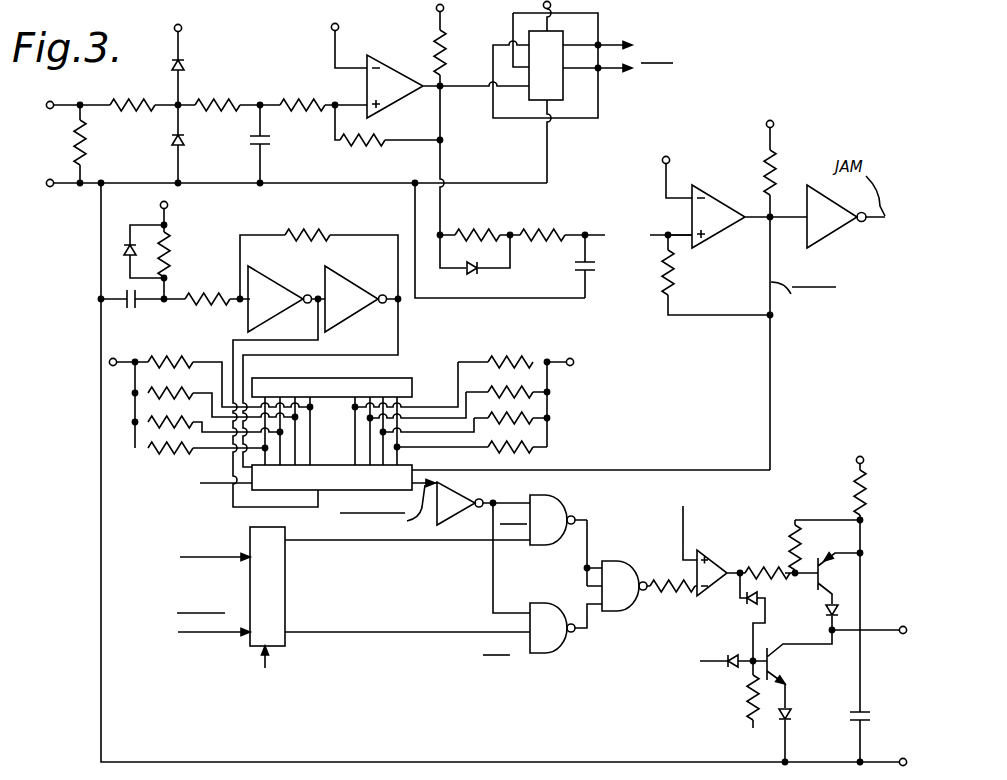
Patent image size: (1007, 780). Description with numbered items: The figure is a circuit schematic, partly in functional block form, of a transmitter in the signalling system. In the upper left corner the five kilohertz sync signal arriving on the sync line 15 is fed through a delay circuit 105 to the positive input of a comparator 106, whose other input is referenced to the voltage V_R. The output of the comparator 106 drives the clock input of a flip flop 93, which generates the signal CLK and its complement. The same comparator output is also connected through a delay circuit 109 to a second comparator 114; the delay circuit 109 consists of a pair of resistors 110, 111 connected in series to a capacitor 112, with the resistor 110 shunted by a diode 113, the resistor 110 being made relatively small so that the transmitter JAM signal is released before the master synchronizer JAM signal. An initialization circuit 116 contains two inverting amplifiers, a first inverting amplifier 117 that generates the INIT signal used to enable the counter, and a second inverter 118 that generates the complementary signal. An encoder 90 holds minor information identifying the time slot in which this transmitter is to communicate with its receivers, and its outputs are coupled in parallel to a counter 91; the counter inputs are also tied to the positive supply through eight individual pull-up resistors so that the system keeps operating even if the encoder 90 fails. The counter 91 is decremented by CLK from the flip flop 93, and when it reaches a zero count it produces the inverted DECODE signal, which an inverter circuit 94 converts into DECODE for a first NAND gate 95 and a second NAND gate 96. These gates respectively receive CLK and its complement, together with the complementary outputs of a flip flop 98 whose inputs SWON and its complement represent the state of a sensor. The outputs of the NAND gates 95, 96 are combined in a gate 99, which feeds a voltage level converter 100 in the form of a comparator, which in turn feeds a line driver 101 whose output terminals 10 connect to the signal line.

The sync line 15 is at (50, 112).
The delay circuit 105 is at (236, 158).
The comparator 106 is at (392, 74).
The flip flop 93 is at (563, 78).
The delay circuit 109 is at (560, 294).
The resistor 110 is at (474, 233).
The resistor 111 is at (550, 233).
The capacitor 112 is at (592, 264).
The diode 113 is at (468, 276).
The comparator 114 is at (723, 210).
The initialization circuit 116 is at (222, 269).
The inverting amplifier 117 is at (278, 280).
The inverter 118 is at (356, 282).
The encoder 90 is at (396, 377).
The counter 91 is at (327, 463).
The inverter circuit 94 is at (469, 498).
The first NAND gate 95 is at (551, 498).
The second NAND gate 96 is at (545, 653).
The flip flop 98 is at (285, 582).
The gate 99 is at (621, 561).
The voltage level converter 100 is at (716, 597).
The line driver 101 is at (838, 742).
The output terminals 10 is at (903, 755).